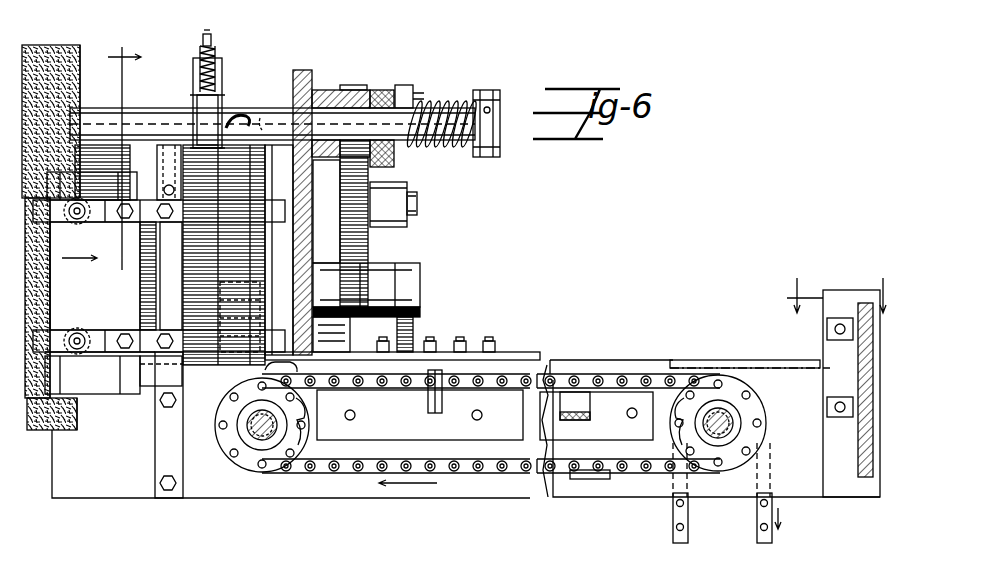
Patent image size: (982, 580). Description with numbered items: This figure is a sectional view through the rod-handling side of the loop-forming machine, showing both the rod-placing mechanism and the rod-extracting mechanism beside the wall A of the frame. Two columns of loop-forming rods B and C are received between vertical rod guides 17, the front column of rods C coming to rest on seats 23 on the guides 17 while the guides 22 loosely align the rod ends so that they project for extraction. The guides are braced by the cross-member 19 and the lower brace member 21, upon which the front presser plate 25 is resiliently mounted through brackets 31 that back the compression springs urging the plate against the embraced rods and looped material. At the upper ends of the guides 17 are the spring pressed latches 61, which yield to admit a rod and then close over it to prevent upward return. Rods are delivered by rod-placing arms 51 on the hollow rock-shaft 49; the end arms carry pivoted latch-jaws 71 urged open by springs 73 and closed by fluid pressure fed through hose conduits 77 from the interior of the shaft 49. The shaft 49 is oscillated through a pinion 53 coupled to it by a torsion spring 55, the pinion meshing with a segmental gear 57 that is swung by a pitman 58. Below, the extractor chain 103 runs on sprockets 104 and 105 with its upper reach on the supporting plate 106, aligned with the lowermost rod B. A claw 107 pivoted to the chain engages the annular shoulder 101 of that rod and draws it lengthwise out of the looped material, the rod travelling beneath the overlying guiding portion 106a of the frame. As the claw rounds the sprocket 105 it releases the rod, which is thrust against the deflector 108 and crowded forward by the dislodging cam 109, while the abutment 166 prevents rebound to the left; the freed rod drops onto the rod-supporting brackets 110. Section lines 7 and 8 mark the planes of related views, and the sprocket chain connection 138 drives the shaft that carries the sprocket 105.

The wall A is at (42, 52).
The section line 7- 7 is at (110, 158).
The section line 8- 8 is at (836, 377).
The vertical rod guide 17 is at (162, 265).
The cross-member 19 is at (159, 198).
The brace member 21 is at (60, 358).
The guide 22 is at (262, 300).
The seat 23 is at (150, 392).
The front presser plate 25 is at (95, 276).
The bracket 31 is at (80, 222).
The rock-shaft 49 is at (302, 115).
The rod-placing arm 51 is at (216, 86).
The pinion 53 is at (350, 92).
The torsion spring 55 is at (418, 100).
The segmental gear 57 is at (362, 252).
The pitman 58 is at (392, 230).
The spring pressed latch 61 is at (165, 108).
The latch-jaw 71 is at (205, 36).
The spring 73 is at (216, 46).
The hose conduit 77 is at (240, 106).
The annular shoulder 101 is at (270, 355).
The extractor chain 103 is at (603, 372).
The sprocket 104 is at (245, 448).
The sprocket 105 is at (750, 428).
The supporting plate 106 is at (412, 372).
The overlying guiding portion 106a is at (536, 338).
The claw 107 is at (270, 378).
The deflector 108 is at (832, 372).
The dislodging cam 109 is at (592, 480).
The rod-supporting bracket 110 is at (568, 400).
The sprocket chain connection 138 is at (672, 514).
The abutment 166 is at (458, 362).
The loop-forming rod B is at (222, 378).
The loop-forming rod C is at (287, 425).